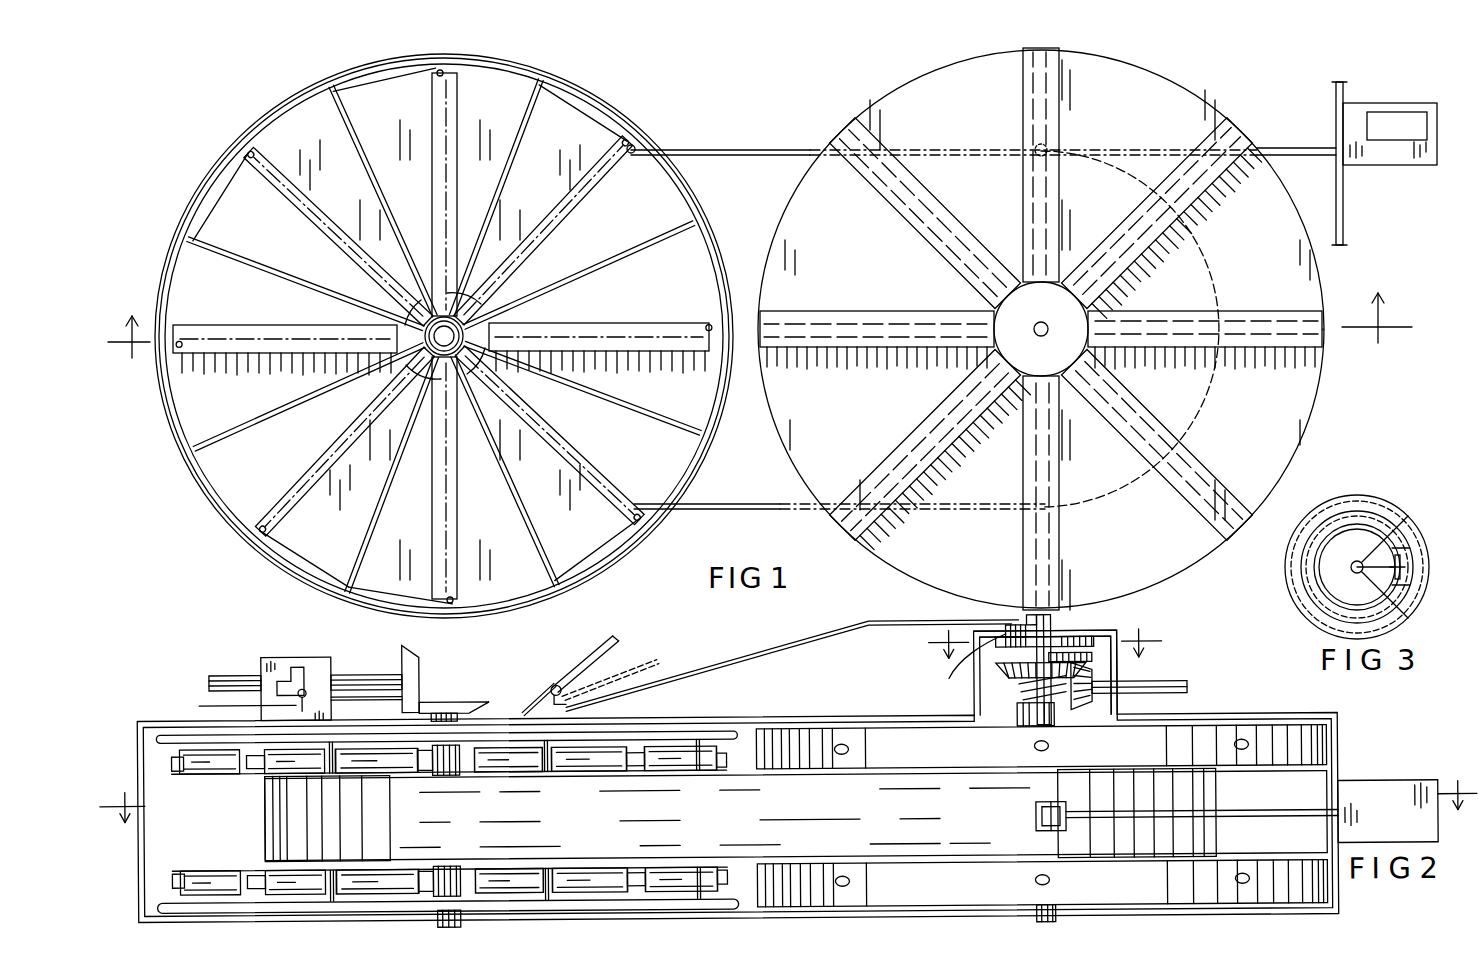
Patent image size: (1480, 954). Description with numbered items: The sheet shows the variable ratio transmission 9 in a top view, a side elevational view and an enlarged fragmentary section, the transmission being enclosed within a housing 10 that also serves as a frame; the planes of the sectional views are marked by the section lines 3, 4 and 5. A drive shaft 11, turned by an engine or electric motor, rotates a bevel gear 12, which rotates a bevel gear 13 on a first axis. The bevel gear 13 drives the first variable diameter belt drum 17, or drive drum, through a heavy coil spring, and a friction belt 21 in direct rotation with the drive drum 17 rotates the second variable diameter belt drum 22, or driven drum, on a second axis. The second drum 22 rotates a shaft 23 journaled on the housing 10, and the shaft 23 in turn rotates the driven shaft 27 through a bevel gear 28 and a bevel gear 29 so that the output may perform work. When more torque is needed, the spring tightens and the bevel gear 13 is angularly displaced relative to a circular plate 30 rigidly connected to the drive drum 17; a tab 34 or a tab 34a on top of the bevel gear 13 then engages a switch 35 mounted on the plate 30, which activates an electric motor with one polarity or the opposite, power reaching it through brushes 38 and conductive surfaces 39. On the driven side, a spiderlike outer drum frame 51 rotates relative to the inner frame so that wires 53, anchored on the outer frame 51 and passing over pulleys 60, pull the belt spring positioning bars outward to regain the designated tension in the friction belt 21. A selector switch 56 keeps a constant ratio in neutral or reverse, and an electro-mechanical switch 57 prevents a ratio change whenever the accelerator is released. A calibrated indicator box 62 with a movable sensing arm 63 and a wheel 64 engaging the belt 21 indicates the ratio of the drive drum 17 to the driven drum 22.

In FIG. 1, the variable ratio transmission 9 is at (1325, 405).
In FIG. 2, the variable ratio transmission 9 is at (1342, 742).
In FIG. 2, the housing 10 is at (680, 716).
In FIG. 2, the drive shaft 11 is at (1148, 684).
In FIG. 2, the bevel gear 12 is at (1082, 704).
In FIG. 2, the bevel gear 13 is at (1016, 677).
In FIG. 1, the first variable diameter belt drum 17 is at (1215, 78).
In FIG. 2, the first variable diameter belt drum 17 is at (1243, 710).
In FIG. 1, the friction belt 21 is at (772, 148).
In FIG. 2, the friction belt 21 is at (1218, 792).
In FIG. 1, the second variable diameter belt drum 22 is at (444, 336).
In FIG. 2, the second variable diameter belt drum 22 is at (200, 700).
In FIG. 2, the shaft 23 is at (436, 917).
In FIG. 2, the driven shaft 27 is at (374, 672).
In FIG. 2, the bevel gear 28 is at (456, 700).
In FIG. 2, the bevel gear 29 is at (428, 672).
In FIG. 2, the circular plate 30 is at (1097, 645).
In FIG. 3, the tab 34 is at (1402, 540).
In FIG. 3, the tab 34a is at (1398, 593).
In FIG. 3, the switch 35 is at (1405, 565).
In FIG. 2, the brushes 38 is at (801, 663).
In FIG. 3, the conductive surfaces 39 is at (1370, 528).
In FIG. 1, the spiderlike outer drum frame 51 is at (208, 168).
In FIG. 1, the wires 53 is at (572, 103).
In FIG. 2, the selector switch 56 is at (262, 666).
In FIG. 2, the electro-mechanical switch 57 is at (550, 687).
In FIG. 1, the pulleys 60 is at (634, 146).
In FIG. 1, the calibrated indicator box 62 is at (1404, 165).
In FIG. 2, the calibrated indicator box 62 is at (1410, 802).
In FIG. 1, the movable sensing arm 63 is at (1300, 144).
In FIG. 2, the movable sensing arm 63 is at (1287, 821).
In FIG. 1, the wheel 64 is at (1033, 146).
In FIG. 2, the wheel 64 is at (1035, 820).
In FIG. 2, the section line 3— 3 is at (1045, 639).
In FIG. 2, the section line 4— 4 is at (788, 796).
In FIG. 1, the section line 5— 5 is at (760, 325).